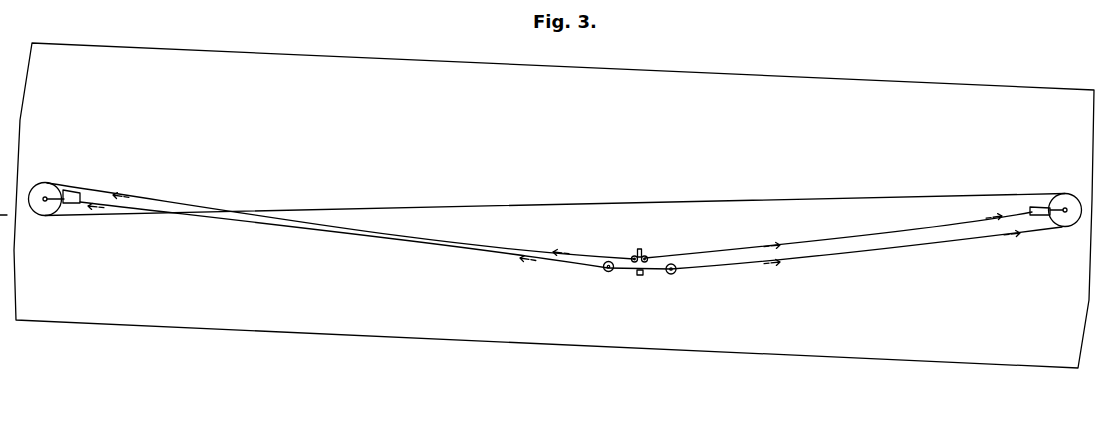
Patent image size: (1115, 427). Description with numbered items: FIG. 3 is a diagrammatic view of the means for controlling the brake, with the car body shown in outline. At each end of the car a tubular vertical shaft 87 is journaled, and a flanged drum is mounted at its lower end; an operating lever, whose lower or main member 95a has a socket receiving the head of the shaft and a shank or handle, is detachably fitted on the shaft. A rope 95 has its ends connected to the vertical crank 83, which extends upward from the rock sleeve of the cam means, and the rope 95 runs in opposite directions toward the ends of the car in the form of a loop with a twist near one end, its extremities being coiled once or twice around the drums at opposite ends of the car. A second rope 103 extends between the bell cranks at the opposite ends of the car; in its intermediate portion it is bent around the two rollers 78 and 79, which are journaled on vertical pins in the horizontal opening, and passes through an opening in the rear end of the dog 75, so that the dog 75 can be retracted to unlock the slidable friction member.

The vertical shaft 87 is at (45, 197).
The rope 95 is at (173, 200).
The lower or main member of the operating lever 95a is at (68, 205).
The rope 103 is at (250, 221).
The roller 79 is at (631, 257).
The roller 78 is at (648, 257).
The dog 75 is at (641, 250).
The crank 83 is at (640, 278).